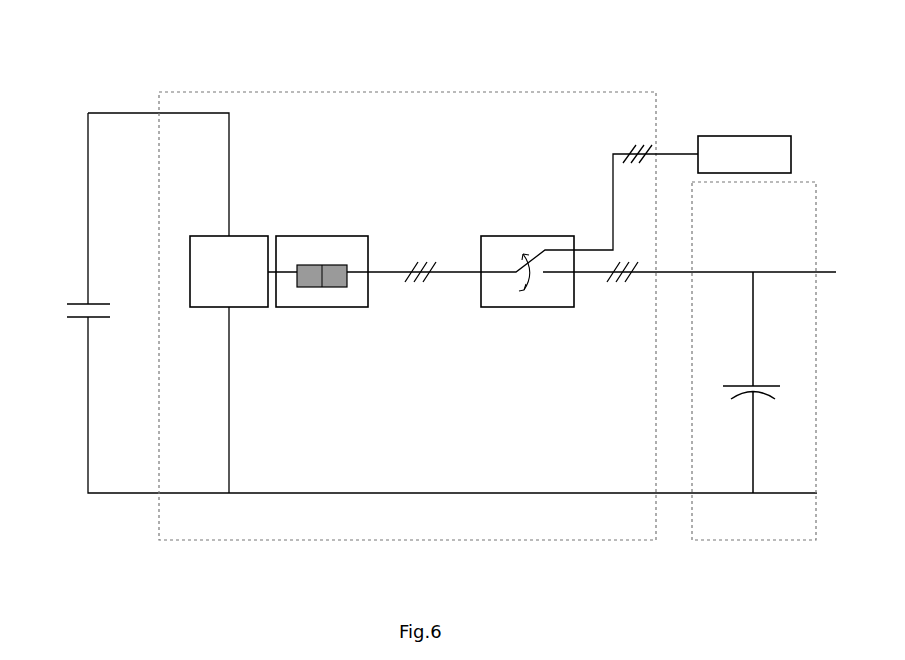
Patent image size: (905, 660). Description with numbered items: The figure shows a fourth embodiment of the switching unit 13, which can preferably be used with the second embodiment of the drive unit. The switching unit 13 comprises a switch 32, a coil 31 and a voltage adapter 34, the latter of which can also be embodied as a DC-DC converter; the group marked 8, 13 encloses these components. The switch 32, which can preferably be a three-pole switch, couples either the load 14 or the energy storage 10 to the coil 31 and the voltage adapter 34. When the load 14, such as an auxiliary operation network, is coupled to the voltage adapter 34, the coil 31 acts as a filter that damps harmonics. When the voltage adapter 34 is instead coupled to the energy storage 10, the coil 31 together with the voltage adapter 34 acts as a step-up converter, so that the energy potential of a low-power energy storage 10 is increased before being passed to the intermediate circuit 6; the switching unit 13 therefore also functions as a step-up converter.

The intermediate circuit 6 is at (77, 298).
The auxiliary converter unit 8 is at (407, 284).
The switching unit 13 is at (401, 91).
The energy storage 10 is at (798, 180).
The load 14 is at (729, 135).
The coil 31 is at (303, 235).
The switch 32 is at (498, 235).
The voltage adapter 34 is at (237, 235).